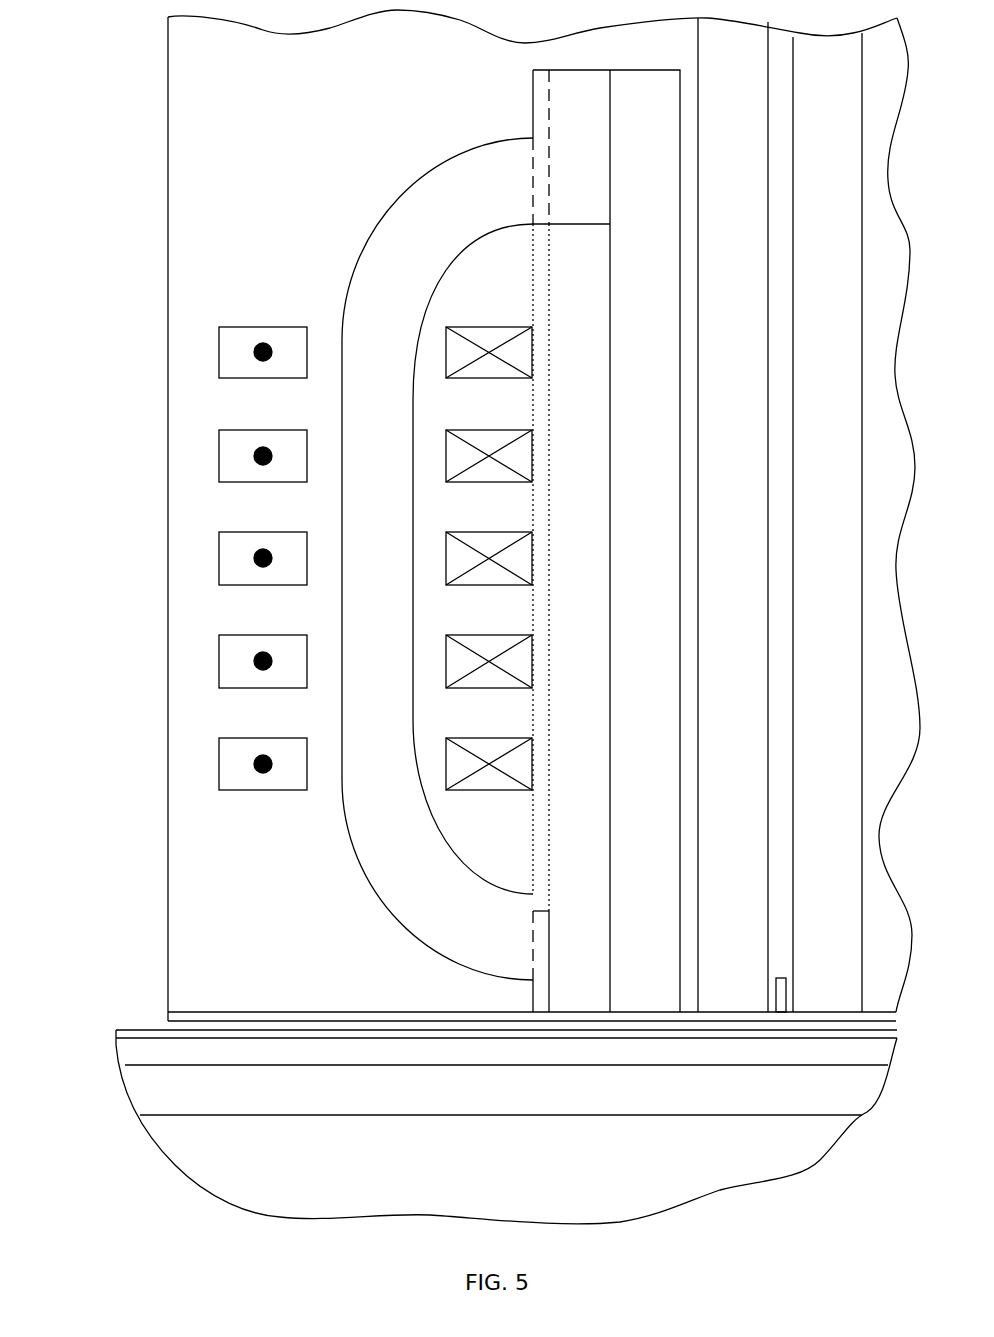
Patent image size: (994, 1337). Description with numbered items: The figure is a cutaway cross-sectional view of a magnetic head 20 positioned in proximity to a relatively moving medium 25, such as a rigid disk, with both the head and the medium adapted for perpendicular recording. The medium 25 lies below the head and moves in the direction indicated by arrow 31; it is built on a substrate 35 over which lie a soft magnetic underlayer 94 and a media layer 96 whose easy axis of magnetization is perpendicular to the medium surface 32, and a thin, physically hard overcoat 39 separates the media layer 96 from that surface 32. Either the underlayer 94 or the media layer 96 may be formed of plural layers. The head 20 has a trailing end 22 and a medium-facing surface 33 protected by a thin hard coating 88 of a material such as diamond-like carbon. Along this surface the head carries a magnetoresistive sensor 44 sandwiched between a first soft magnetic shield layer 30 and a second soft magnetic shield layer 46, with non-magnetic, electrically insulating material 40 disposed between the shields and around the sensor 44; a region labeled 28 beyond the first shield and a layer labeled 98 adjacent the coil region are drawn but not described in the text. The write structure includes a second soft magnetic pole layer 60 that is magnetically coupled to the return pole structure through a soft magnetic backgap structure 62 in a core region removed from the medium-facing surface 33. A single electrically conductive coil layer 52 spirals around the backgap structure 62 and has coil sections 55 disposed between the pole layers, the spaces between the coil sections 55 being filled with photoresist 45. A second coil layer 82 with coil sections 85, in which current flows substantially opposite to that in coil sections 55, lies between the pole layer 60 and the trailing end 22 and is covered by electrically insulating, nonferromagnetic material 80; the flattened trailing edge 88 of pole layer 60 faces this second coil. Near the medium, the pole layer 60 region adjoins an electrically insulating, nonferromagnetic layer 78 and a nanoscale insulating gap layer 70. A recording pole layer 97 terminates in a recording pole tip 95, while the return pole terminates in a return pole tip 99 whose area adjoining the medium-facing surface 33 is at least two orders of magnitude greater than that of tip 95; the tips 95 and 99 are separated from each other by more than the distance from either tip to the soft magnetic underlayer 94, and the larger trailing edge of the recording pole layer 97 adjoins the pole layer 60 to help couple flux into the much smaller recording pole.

The magnetic head 20 is at (117, 60).
The trailing end 22 is at (166, 549).
The medium 25 is at (130, 1137).
The outer substrate layer 28 is at (872, 738).
The first soft magnetic shield layer 30 is at (813, 648).
The arrow 31 is at (342, 1132).
The medium surface 32 is at (141, 1028).
The medium-facing surface 33 is at (290, 1022).
The substrate 35 is at (502, 1173).
The hard overcoat 39 is at (744, 1040).
The non-magnetic electrically insulating material 40 is at (793, 318).
The magnetoresistive sensor 44 is at (786, 997).
The photoresist 45 is at (449, 620).
The second soft magnetic shield layer 46 is at (718, 648).
The coil layer 52 is at (497, 318).
The coil sections 55 is at (532, 447).
The second soft magnetic pole layer 60 is at (359, 647).
The backgap structure 62 is at (533, 103).
The gap layer 70 is at (549, 945).
The electrically insulating nonferromagnetic layer 78 is at (533, 842).
The electrically insulating nonferromagnetic material 80 is at (179, 627).
The second coil layer 82 is at (263, 318).
The coil sections 85 is at (219, 352).
The hard coating 88 is at (342, 506).
The soft magnetic underlayer 94 is at (636, 1116).
The recording pole tip 95 is at (541, 1014).
The media layer 96 is at (413, 1066).
The recording pole layer 97 is at (533, 987).
The support plate 98 is at (632, 717).
The return pole tip 99 is at (636, 1015).